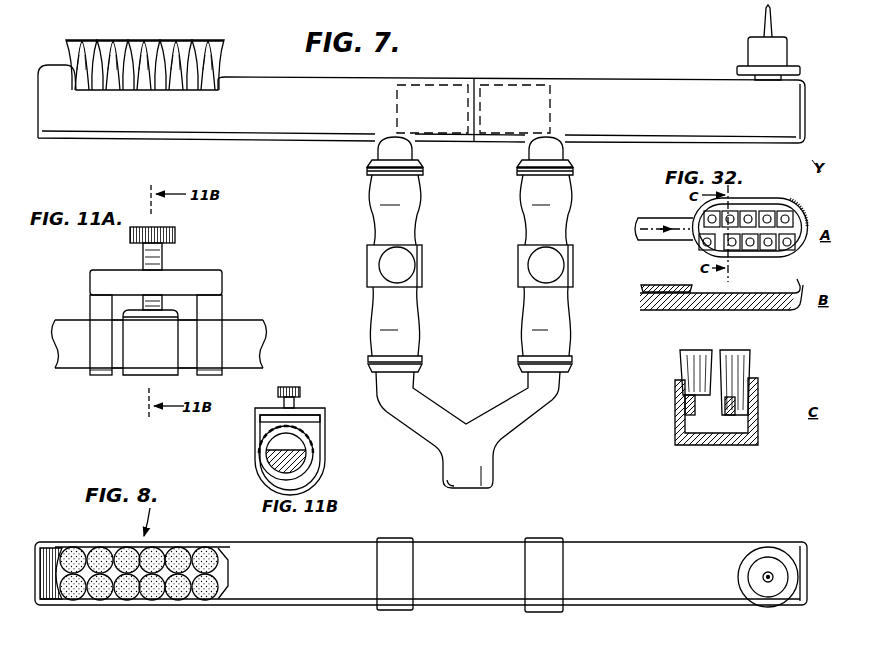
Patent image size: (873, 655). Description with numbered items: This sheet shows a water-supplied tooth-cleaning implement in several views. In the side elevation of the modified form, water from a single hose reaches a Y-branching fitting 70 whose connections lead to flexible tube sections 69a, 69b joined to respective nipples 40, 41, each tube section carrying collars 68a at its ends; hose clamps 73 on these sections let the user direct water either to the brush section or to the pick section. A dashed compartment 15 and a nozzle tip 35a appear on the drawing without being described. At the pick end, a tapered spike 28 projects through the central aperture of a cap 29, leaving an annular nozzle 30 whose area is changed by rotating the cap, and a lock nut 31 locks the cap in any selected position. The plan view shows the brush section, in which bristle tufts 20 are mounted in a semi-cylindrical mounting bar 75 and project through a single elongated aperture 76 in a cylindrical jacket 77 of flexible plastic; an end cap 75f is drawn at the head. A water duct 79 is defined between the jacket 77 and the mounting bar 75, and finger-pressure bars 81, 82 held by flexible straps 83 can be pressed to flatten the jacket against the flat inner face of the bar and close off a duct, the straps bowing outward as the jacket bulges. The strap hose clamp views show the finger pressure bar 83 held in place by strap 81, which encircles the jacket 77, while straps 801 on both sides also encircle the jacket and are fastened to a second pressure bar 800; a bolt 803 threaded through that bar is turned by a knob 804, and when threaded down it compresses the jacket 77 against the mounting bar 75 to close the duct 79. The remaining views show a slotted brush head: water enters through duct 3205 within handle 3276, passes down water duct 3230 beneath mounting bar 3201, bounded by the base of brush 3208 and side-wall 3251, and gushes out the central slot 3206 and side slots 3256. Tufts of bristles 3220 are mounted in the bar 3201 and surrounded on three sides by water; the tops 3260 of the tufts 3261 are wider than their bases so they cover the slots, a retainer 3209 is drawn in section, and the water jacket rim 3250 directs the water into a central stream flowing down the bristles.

In FIG. 7, the compartment 15 is at (484, 112).
In FIG. 7, the bristle tufts 20 is at (212, 40).
In FIG. 8, the bristle tufts 20 is at (215, 555).
In FIG. 7, the tapered spike 28 is at (765, 19).
In FIG. 8, the tapered spike 28 is at (763, 576).
In FIG. 7, the cap 29 is at (748, 48).
In FIG. 8, the cap 29 is at (776, 556).
In FIG. 8, the annular nozzle 30 is at (766, 582).
In FIG. 7, the lock nut 31 is at (737, 70).
In FIG. 7, the nozzle tip 35a is at (448, 470).
In FIG. 7, the nipple 40 is at (385, 155).
In FIG. 7, the nipple 41 is at (556, 155).
In FIG. 7, the collar 68a is at (367, 167).
In FIG. 7, the flexible tube section 69a is at (570, 232).
In FIG. 7, the flexible tube section 69b is at (372, 212).
In FIG. 7, the Y-branching fitting 70 is at (497, 445).
In FIG. 7, the hose clamps 73 is at (423, 266).
In FIG. 11B, the mounting bar 75 is at (306, 469).
In FIG. 8, the end cap 75f is at (50, 568).
In FIG. 7, the elongated aperture 76 is at (222, 80).
In FIG. 8, the elongated aperture 76 is at (230, 582).
In FIG. 11A, the cylindrical jacket 77 is at (76, 320).
In FIG. 11B, the cylindrical jacket 77 is at (305, 492).
In FIG. 8, the cylindrical jacket 77 is at (672, 542).
In FIG. 11B, the water duct 79 is at (270, 470).
In FIG. 11A, the finger-pressure bar 81 is at (175, 346).
In FIG. 8, the finger-pressure bar 81 is at (408, 538).
In FIG. 8, the finger-pressure bar 82 is at (560, 540).
In FIG. 11A, the flexible straps 83 is at (180, 318).
In FIG. 11B, the flexible straps 83 is at (313, 448).
In FIG. 11A, the second pressure bar 800 is at (100, 278).
In FIG. 11B, the second pressure bar 800 is at (325, 418).
In FIG. 11A, the straps 801 is at (100, 344).
In FIG. 11B, the straps 801 is at (258, 420).
In FIG. 11A, the bolt 803 is at (162, 260).
In FIG. 11B, the bolt 803 is at (300, 405).
In FIG. 11A, the knob 804 is at (175, 236).
In FIG. 11B, the knob 804 is at (300, 391).
In FIG. 32, the mounting bar 3201 is at (755, 212).
In FIG. 32, the duct 3205 is at (700, 242).
In FIG. 32, the central slot 3206 is at (700, 245).
In FIG. 32, the base of brush 3208 is at (740, 312).
In FIG. 32, the retainer 3209 is at (700, 406).
In FIG. 32, the tufts of bristles 3220 is at (752, 212).
In FIG. 32, the water duct 3230 is at (685, 425).
In FIG. 32, the water jacket rim 3250 is at (797, 207).
In FIG. 32, the side-wall 3251 is at (752, 425).
In FIG. 32, the side slots 3256 is at (740, 245).
In FIG. 32, the tops of the tufts 3260 is at (682, 350).
In FIG. 32, the tufts 3261 is at (718, 395).
In FIG. 32, the handle 3276 is at (672, 218).